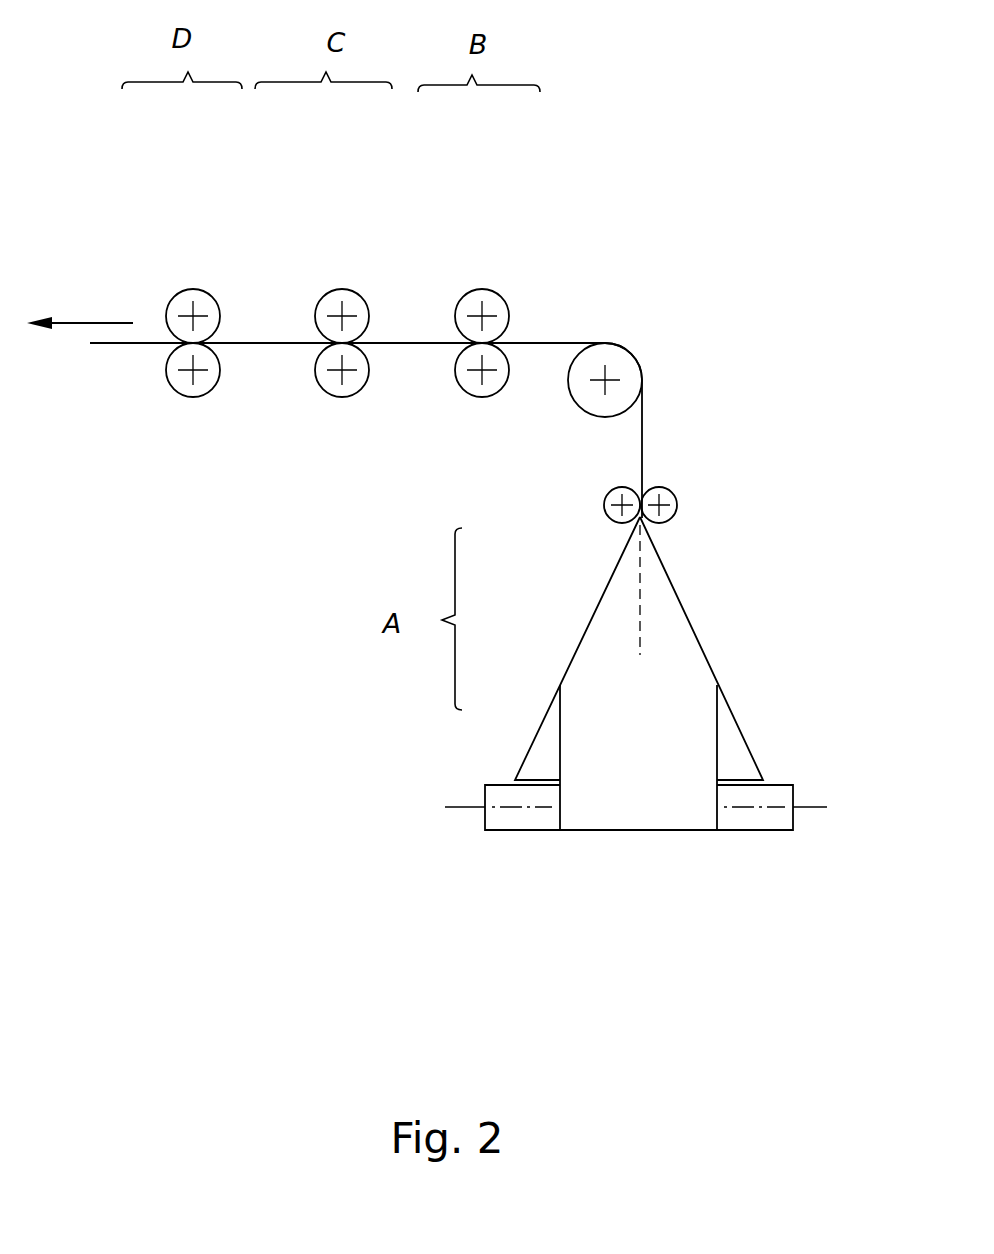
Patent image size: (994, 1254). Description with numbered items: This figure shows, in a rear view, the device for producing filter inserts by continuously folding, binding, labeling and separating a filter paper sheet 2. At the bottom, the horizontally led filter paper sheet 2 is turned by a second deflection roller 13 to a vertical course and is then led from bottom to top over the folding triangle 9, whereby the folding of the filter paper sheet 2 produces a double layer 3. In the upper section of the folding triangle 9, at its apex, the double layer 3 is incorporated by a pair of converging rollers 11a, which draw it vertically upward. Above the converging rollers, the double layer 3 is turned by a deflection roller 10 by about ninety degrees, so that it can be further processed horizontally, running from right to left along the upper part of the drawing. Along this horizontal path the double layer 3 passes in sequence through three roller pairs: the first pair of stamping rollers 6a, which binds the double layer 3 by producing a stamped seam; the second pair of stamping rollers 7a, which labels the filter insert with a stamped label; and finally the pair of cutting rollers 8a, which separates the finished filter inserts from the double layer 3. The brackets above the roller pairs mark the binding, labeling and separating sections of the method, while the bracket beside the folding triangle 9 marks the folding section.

The filter paper sheet 2 is at (635, 822).
The double layer 3 is at (267, 343).
The first pair of stamping rollers 6a is at (472, 307).
The second pair of stamping rollers 7a is at (333, 307).
The pair of cutting rollers 8a is at (185, 307).
The folding triangle 9 is at (732, 745).
The deflection roller 10 is at (613, 356).
The pair of converging rollers 11a is at (668, 488).
The second deflection roller 13 is at (765, 809).